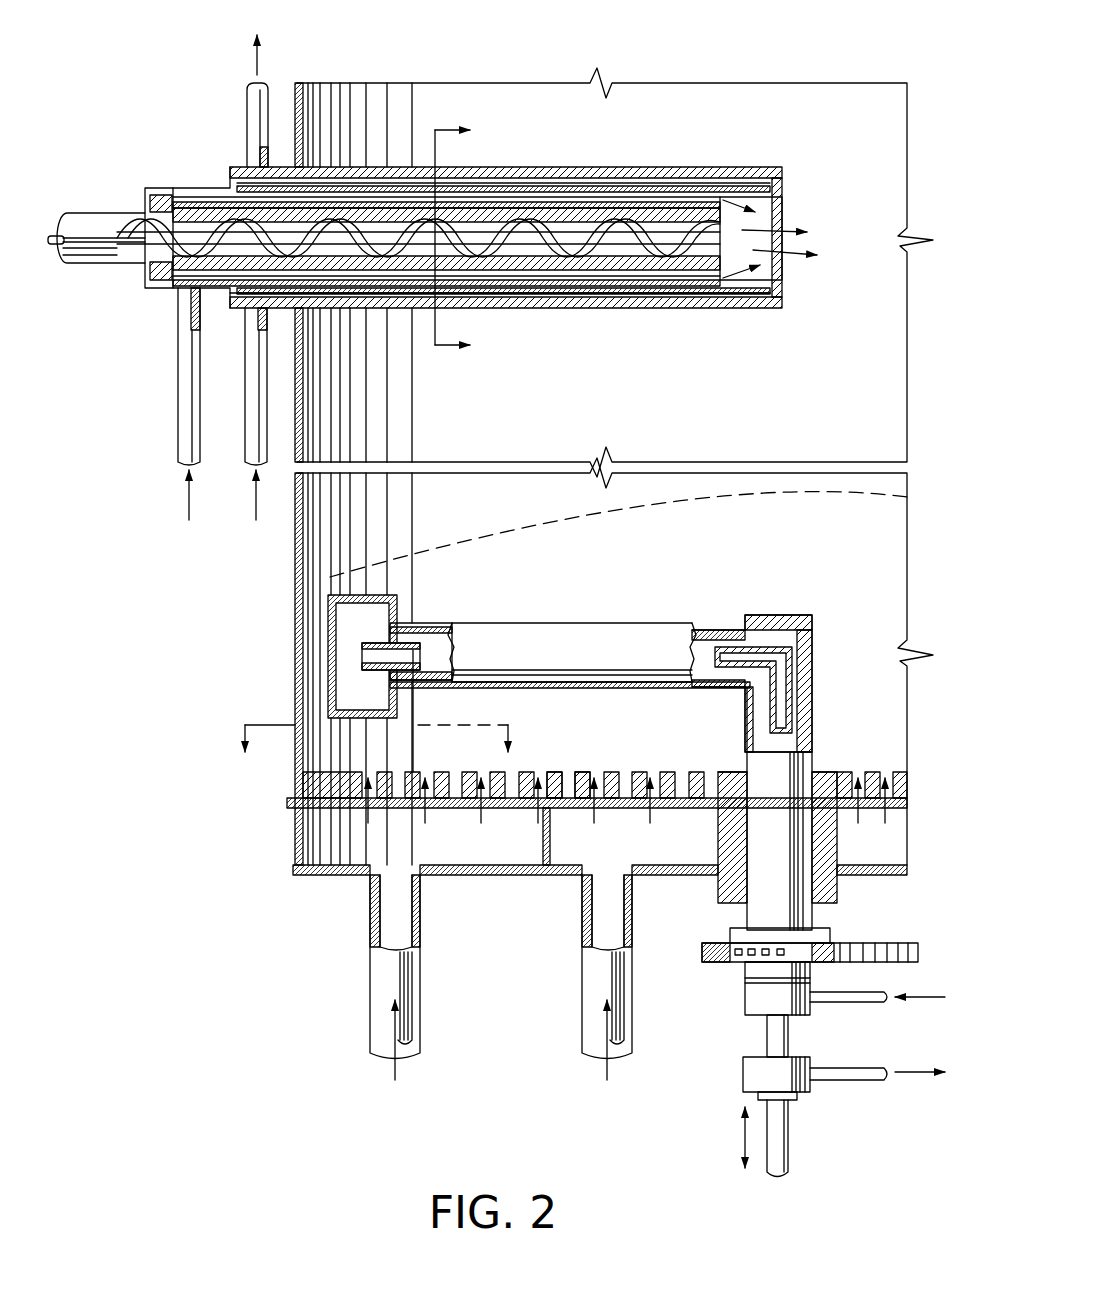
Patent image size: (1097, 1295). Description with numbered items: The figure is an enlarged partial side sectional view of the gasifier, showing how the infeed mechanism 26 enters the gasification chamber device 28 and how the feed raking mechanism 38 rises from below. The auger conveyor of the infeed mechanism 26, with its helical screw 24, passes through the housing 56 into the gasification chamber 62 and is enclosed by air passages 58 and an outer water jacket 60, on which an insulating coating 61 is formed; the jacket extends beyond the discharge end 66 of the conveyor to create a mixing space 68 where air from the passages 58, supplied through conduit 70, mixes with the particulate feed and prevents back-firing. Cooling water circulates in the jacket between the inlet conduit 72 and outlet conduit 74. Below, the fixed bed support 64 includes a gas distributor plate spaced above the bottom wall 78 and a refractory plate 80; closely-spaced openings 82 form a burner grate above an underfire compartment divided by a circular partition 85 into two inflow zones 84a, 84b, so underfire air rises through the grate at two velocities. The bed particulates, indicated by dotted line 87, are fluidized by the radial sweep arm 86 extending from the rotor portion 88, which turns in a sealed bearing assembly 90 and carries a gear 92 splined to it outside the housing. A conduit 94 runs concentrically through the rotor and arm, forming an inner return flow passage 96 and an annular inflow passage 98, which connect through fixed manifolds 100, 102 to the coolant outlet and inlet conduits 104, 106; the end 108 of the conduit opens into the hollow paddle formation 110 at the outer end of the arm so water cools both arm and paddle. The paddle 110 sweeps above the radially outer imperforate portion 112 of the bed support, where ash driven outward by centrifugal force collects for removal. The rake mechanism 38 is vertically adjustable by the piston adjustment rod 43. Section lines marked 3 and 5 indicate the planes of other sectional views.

The infeed mechanism 26 is at (165, 170).
The gasification chamber device 28 is at (675, 80).
The outlet conduit 74 is at (250, 110).
The housing 56 is at (303, 105).
The section line 5 is at (466, 239).
The screw 24 is at (523, 227).
The air passages 58 is at (638, 200).
The outer water jacket 60 is at (703, 187).
The mixing space 68 is at (755, 197).
The discharge end 66 is at (707, 250).
The insulating coating 61 is at (590, 310).
The conduit 70 is at (180, 435).
The inlet conduit 72 is at (252, 367).
The gasification chamber 62 is at (332, 432).
The dotted line 87 is at (487, 525).
The hollow paddle formation 110 is at (382, 600).
The annular inflow passage 98 is at (420, 632).
The radial sweep arm 86 is at (585, 642).
The end of inner conduit 108 is at (362, 658).
The inner return flow passage 96 is at (431, 658).
The conduit 94 is at (790, 662).
The bed support 64 is at (830, 757).
The openings 82 is at (560, 770).
The refractory plate 80 is at (625, 770).
The imperforate portion 112 is at (320, 787).
The inflow zone 84a is at (690, 852).
The inflow zone 84b is at (482, 852).
The circular partition 85 is at (548, 833).
The sealed bearing assembly 90 is at (838, 835).
The bottom wall 78 is at (498, 876).
The rotor portion 88 is at (765, 890).
The gear 92 is at (722, 945).
The feed raking mechanism 38 is at (735, 985).
The fixed manifold 102 is at (763, 998).
The coolant inlet conduit 106 is at (868, 1003).
The fixed manifold 100 is at (757, 1075).
The coolant outlet conduit 104 is at (858, 1078).
The piston adjustment rod 43 is at (793, 1140).
The section line 3 is at (376, 723).